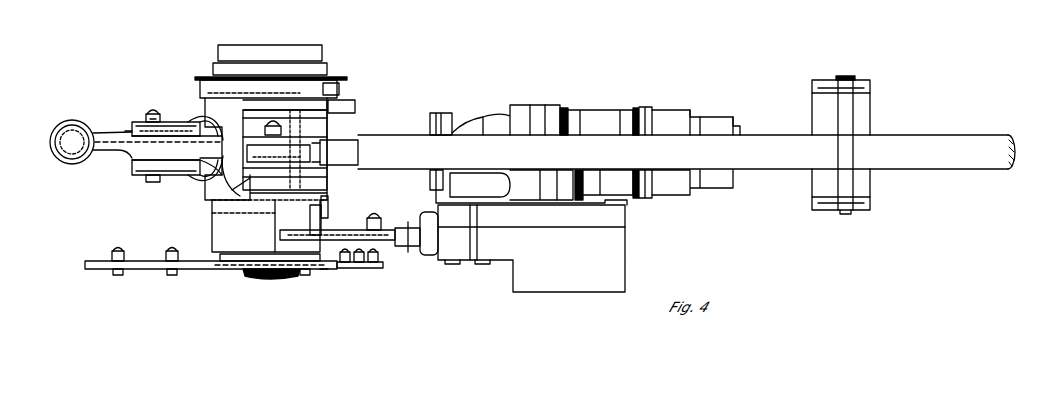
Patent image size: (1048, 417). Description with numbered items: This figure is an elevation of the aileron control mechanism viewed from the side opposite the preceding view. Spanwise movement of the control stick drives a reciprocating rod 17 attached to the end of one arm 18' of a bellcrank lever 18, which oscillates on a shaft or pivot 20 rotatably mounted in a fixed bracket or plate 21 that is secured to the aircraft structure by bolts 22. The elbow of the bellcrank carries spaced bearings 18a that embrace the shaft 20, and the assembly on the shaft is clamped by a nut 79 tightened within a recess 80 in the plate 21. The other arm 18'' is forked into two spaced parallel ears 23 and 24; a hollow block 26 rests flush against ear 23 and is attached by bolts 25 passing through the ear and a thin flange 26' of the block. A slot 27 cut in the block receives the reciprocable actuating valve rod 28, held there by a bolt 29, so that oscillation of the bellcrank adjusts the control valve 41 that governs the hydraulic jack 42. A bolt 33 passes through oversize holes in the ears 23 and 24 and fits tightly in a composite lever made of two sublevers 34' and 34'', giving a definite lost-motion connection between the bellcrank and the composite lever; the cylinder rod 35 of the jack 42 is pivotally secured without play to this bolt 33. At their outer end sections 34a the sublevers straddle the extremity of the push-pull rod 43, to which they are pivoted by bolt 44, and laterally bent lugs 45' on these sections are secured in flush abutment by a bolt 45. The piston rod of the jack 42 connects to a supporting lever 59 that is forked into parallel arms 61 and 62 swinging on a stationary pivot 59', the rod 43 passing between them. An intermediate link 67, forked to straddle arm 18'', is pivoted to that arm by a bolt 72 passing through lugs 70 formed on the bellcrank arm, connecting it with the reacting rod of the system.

The reciprocating rod 17 is at (64, 160).
The bellcrank lever 18 is at (157, 160).
The arm of bellcrank lever 18' is at (115, 116).
The arm of bellcrank lever 18'' is at (200, 182).
The bearings 18a is at (355, 107).
The lugs 70 is at (138, 123).
The bolt 72 is at (151, 112).
The intermediate link 67 is at (152, 183).
The bolt 45 is at (197, 120).
The lugs 45' is at (187, 181).
The bolt 44 is at (266, 128).
The sublever 34'' is at (291, 71).
The bolt 33 is at (330, 190).
The ear 23 is at (328, 188).
The ear 24 is at (328, 120).
The cylinder rod 35 is at (350, 136).
The push-pull rod 43 is at (773, 126).
The outer section of sublever 34a is at (228, 185).
The flange 26' is at (221, 199).
The sublever 34' is at (216, 220).
The bolts 25 is at (272, 220).
The bolt 29 is at (280, 256).
The hollow block 26 is at (333, 217).
The slot 27 is at (354, 222).
The actuating valve rod 28 is at (376, 216).
The bracket or plate 21 is at (198, 270).
The bolts 22 is at (120, 276).
The shaft or pivot 20 is at (290, 278).
The nut 79 is at (308, 276).
The recess 80 is at (314, 270).
The control valve 41 is at (512, 270).
The hydraulic jack 42 is at (607, 125).
The supporting lever 59 is at (858, 145).
The stationary pivot 59' is at (850, 131).
The arm of supporting lever 61 is at (858, 84).
The arm of supporting lever 62 is at (866, 200).